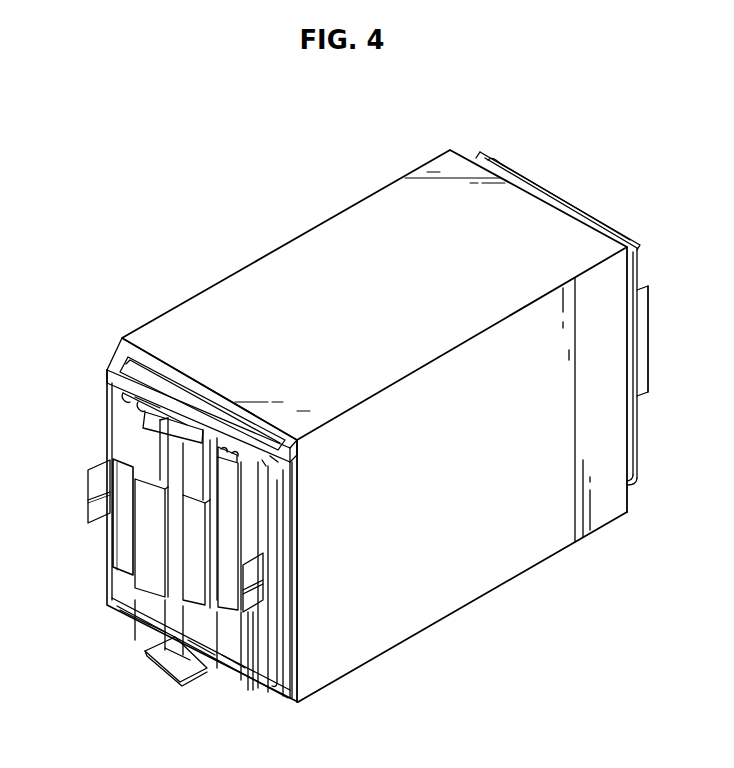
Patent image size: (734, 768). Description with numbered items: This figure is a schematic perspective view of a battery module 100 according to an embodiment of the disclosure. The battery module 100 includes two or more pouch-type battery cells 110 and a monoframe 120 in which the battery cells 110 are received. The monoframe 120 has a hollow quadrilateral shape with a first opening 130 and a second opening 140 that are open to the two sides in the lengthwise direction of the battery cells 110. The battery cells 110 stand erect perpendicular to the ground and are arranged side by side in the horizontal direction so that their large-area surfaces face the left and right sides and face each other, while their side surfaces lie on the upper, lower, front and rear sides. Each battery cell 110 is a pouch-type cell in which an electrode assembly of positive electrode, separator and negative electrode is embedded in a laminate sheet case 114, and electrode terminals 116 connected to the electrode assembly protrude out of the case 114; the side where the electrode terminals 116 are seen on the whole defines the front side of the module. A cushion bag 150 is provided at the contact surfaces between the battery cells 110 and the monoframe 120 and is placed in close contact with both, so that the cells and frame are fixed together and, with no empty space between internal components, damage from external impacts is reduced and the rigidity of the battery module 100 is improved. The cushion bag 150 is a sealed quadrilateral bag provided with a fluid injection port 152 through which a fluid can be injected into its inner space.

The battery module 100 is at (207, 158).
The pouch-type battery cell 110 is at (102, 549).
The laminate sheet case 114 is at (260, 647).
The electrode terminal 116 is at (227, 603).
The monoframe 120 is at (468, 573).
The first opening 130 is at (97, 390).
The second opening 140 is at (524, 152).
The cushion bag 150 is at (148, 372).
The fluid injection port 152 is at (165, 414).